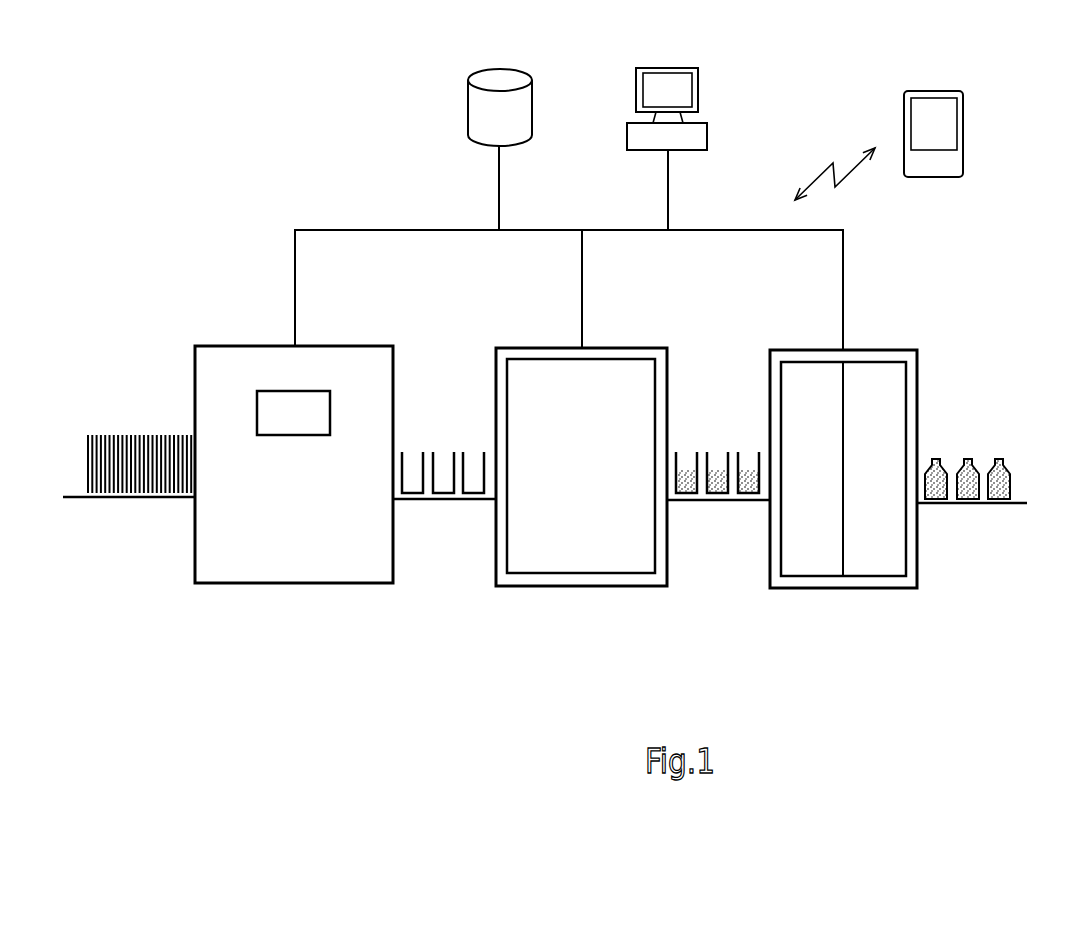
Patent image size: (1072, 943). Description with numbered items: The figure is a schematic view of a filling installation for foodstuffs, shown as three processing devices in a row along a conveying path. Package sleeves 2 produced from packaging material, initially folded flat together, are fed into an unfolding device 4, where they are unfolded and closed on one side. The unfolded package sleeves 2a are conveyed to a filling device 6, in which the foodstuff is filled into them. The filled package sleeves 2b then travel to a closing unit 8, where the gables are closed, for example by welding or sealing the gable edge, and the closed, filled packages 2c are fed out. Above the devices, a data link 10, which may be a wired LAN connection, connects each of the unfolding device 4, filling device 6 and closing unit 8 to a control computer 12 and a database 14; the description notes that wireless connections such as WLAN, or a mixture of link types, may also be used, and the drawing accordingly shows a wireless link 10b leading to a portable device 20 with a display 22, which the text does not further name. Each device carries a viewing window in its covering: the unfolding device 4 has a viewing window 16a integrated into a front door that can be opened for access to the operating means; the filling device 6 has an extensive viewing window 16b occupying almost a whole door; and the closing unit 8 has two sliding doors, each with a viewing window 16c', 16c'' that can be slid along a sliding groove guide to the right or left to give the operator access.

The package sleeves 2 is at (133, 528).
The unfolded package sleeves 2a is at (442, 533).
The filled package sleeves 2b is at (715, 533).
The closed, filled packages 2c is at (974, 535).
The unfolding device 4 is at (287, 614).
The filling device 6 is at (573, 617).
The closing unit 8 is at (835, 617).
The data link 10 is at (374, 227).
The wireless connection 10b is at (823, 173).
The control computer 12 is at (655, 79).
The database 14 is at (487, 78).
The viewing window 16a is at (274, 401).
The viewing window 16b is at (545, 391).
The viewing window 16c' is at (804, 426).
The viewing window 16c'' is at (887, 426).
The mobile terminal device 20 is at (989, 114).
The display of mobile terminal device 22 is at (943, 110).